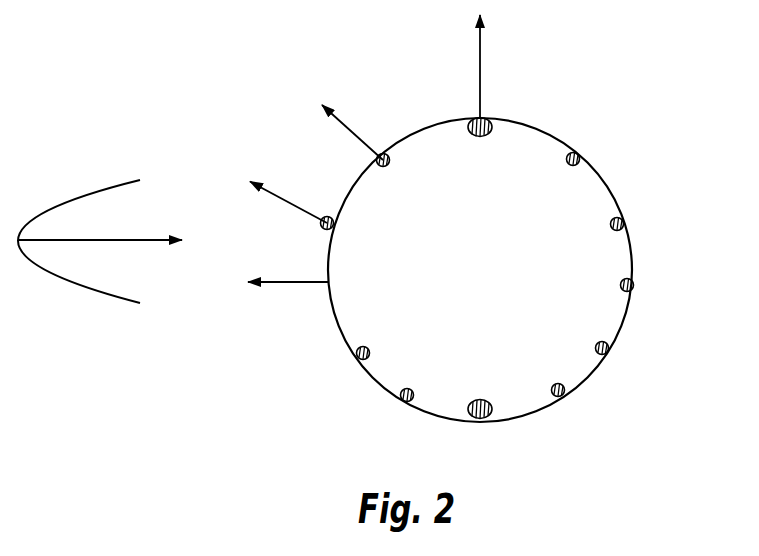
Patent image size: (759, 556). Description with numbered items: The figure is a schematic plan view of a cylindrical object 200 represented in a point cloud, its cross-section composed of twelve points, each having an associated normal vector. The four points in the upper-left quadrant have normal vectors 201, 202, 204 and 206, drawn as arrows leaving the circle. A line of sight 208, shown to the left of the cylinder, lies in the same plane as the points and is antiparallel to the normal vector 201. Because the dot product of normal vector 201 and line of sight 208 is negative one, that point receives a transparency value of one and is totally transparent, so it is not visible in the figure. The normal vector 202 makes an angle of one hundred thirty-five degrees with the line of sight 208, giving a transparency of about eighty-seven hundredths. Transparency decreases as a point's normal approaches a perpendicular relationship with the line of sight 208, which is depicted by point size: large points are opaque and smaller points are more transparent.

The cylindrical object 200 is at (604, 173).
The normal vector 201 is at (295, 292).
The normal vector 202 is at (287, 198).
The normal vector 204 is at (345, 124).
The normal vector 206 is at (481, 78).
The line of sight 208 is at (110, 242).